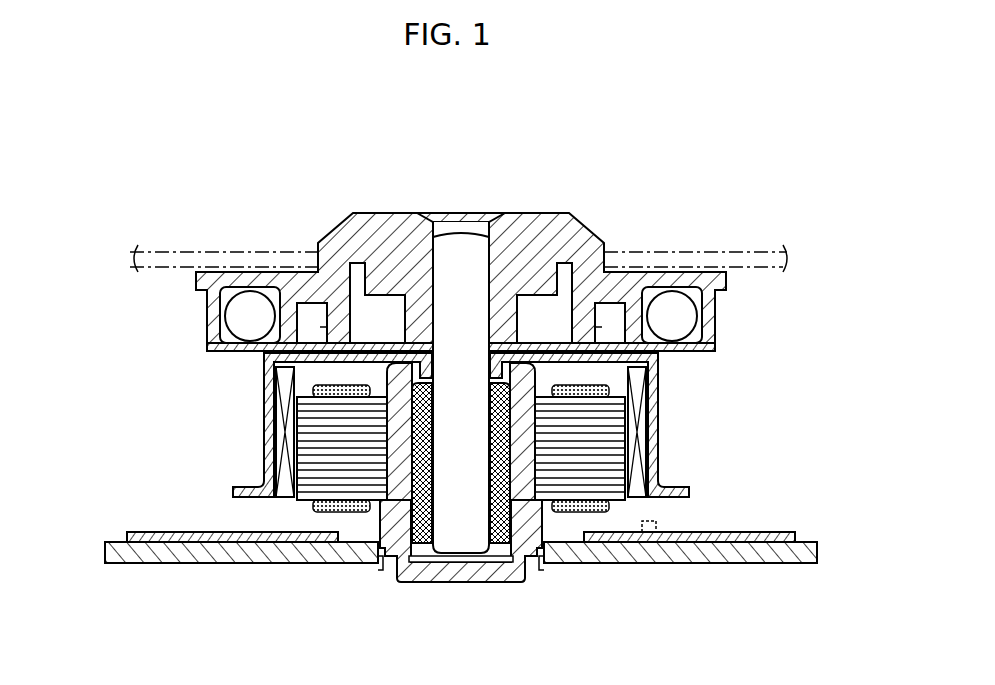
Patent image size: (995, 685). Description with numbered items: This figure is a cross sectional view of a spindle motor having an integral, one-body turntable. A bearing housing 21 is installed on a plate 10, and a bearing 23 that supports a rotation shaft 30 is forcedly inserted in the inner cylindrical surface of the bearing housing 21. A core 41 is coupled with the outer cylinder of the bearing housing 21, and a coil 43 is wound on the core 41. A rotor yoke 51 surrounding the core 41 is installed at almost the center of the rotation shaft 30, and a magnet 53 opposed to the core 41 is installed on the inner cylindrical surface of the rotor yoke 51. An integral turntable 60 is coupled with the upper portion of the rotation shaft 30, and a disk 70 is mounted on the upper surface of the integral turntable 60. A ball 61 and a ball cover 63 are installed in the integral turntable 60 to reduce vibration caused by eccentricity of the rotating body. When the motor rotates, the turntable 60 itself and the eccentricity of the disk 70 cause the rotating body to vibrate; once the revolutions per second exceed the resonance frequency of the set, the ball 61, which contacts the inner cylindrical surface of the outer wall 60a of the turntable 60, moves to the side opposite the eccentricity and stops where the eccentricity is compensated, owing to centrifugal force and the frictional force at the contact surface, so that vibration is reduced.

The plate 10 is at (208, 556).
The bearing housing 21 is at (468, 574).
The bearing 23 is at (424, 565).
The rotation shaft 30 is at (462, 247).
The core 41 is at (567, 513).
The coil 43 is at (618, 506).
The rotor yoke 51 is at (267, 415).
The magnet 53 is at (282, 465).
The integral turntable 60 is at (337, 222).
The outer wall 60a is at (713, 320).
The ball 61 is at (233, 323).
The ball cover 63 is at (717, 351).
The disk 70 is at (773, 253).